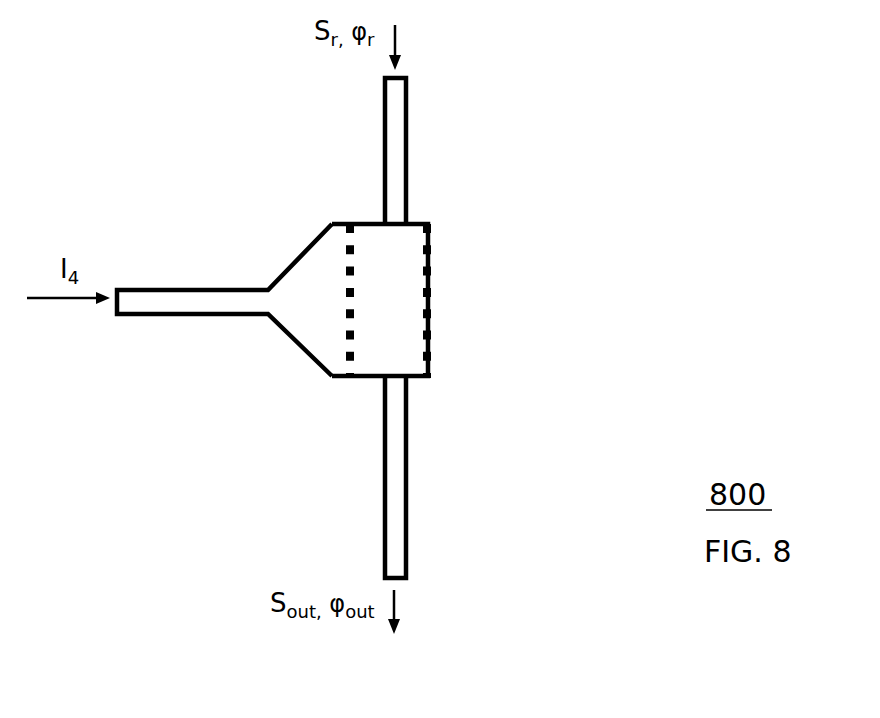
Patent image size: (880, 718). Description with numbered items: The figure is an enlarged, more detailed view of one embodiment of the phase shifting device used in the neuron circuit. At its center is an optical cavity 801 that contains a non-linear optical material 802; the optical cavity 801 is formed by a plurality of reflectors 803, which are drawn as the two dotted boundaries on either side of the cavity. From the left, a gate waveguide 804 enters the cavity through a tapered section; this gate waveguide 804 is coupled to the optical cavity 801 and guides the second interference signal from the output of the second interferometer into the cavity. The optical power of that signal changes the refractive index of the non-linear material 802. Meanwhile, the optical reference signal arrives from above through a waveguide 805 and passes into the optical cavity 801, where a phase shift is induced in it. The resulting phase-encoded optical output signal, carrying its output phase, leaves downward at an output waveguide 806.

The optical cavity 801 is at (354, 393).
The non-linear optical material 802 is at (405, 338).
The reflectors 803 is at (432, 252).
The gate waveguide 804 is at (190, 288).
The waveguide 805 is at (406, 143).
The output waveguide 806 is at (406, 428).